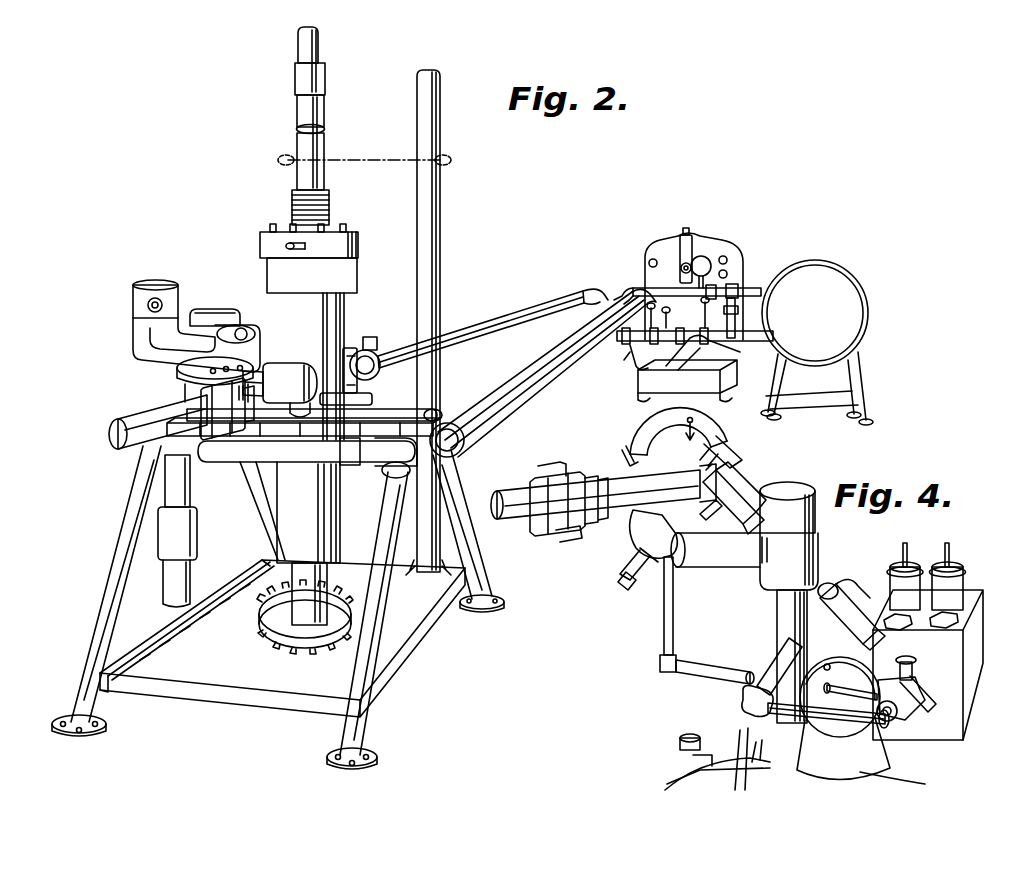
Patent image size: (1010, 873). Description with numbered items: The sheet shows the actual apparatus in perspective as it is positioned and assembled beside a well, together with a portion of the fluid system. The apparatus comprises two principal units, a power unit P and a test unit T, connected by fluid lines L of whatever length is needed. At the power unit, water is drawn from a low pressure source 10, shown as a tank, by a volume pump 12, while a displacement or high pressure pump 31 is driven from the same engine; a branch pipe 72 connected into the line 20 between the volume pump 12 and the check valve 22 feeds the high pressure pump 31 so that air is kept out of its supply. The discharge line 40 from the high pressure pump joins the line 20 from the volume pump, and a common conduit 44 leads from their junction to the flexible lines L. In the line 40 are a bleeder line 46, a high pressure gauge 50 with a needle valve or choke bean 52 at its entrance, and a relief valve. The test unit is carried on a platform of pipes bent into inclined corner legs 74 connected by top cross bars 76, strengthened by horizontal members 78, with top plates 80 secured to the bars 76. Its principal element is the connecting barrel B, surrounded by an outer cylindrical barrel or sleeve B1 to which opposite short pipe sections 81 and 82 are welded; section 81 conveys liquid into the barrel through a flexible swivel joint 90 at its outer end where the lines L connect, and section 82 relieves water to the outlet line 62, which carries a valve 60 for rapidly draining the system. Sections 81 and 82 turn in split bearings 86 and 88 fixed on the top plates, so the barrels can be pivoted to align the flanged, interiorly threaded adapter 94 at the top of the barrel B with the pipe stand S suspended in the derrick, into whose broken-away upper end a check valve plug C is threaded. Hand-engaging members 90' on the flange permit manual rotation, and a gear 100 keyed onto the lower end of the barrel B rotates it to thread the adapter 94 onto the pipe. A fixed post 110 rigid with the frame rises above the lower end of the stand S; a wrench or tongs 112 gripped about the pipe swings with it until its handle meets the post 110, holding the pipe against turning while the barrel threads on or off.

In FIG. 2, the check valve plug C is at (316, 47).
In FIG. 2, the pipe stand S is at (322, 110).
In FIG. 2, the wrench or tongs 112 is at (396, 138).
In FIG. 2, the flanged adapter 94 is at (330, 220).
In FIG. 2, the hand-engaging members 90' is at (266, 230).
In FIG. 2, the outer cylindrical barrel B1 is at (340, 312).
In FIG. 2, the split bearing 86 is at (352, 398).
In FIG. 2, the split bearing 88 is at (292, 363).
In FIG. 2, the pipe section 82 is at (265, 382).
In FIG. 2, the pipe section 81 is at (355, 356).
In FIG. 2, the flexible swivel joint 90 is at (382, 349).
In FIG. 2, the fixed post 110 is at (442, 213).
In FIG. 2, the top plates 80 is at (415, 409).
In FIG. 2, the fluid lines L is at (548, 398).
In FIG. 2, the power unit P is at (745, 236).
In FIG. 2, the source of low pressure fluid 10 is at (864, 312).
In FIG. 2, the test unit T is at (76, 411).
In FIG. 2, the valve 60 is at (212, 372).
In FIG. 2, the top cross bars 76 is at (262, 460).
In FIG. 2, the drain line 62 is at (197, 582).
In FIG. 2, the supporting legs 74 is at (118, 536).
In FIG. 2, the horizontal members 78 is at (416, 636).
In FIG. 2, the connecting barrel B is at (300, 607).
In FIG. 2, the gear 100 is at (290, 640).
In FIG. 4, the high pressure gauge 50 is at (668, 428).
In FIG. 4, the common conduit 44 is at (610, 494).
In FIG. 4, the needle valve or choke bean 52 is at (740, 492).
In FIG. 4, the bleeder line 46 is at (645, 590).
In FIG. 4, the check valve 22 is at (795, 562).
In FIG. 4, the line 20 is at (777, 600).
In FIG. 4, the discharge line 40 is at (728, 630).
In FIG. 4, the branch pipe 72 is at (868, 736).
In FIG. 4, the volume pump 12 is at (798, 772).
In FIG. 4, the high pressure pump 31 is at (940, 730).